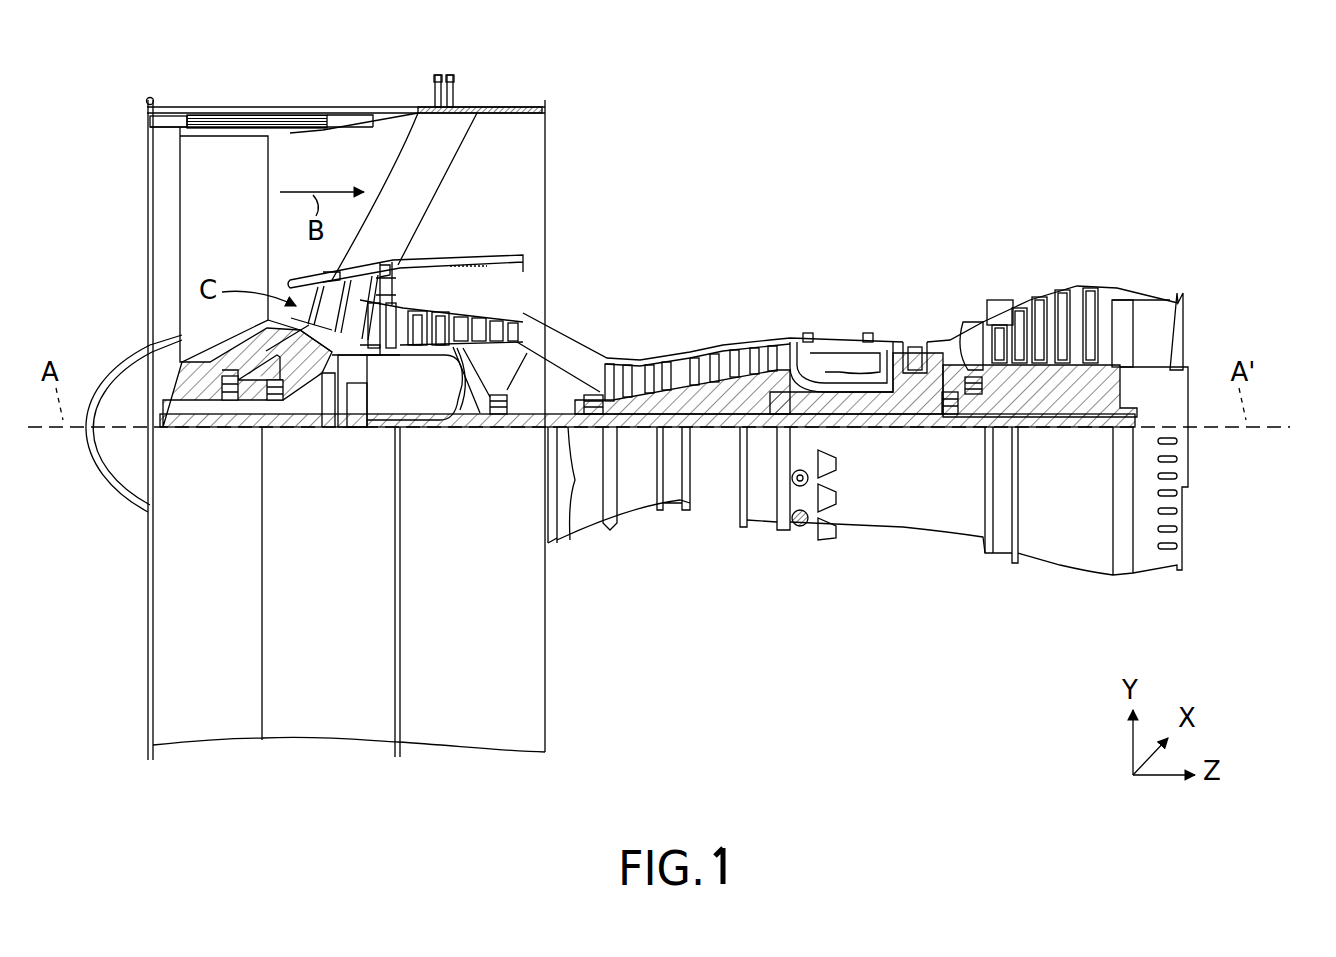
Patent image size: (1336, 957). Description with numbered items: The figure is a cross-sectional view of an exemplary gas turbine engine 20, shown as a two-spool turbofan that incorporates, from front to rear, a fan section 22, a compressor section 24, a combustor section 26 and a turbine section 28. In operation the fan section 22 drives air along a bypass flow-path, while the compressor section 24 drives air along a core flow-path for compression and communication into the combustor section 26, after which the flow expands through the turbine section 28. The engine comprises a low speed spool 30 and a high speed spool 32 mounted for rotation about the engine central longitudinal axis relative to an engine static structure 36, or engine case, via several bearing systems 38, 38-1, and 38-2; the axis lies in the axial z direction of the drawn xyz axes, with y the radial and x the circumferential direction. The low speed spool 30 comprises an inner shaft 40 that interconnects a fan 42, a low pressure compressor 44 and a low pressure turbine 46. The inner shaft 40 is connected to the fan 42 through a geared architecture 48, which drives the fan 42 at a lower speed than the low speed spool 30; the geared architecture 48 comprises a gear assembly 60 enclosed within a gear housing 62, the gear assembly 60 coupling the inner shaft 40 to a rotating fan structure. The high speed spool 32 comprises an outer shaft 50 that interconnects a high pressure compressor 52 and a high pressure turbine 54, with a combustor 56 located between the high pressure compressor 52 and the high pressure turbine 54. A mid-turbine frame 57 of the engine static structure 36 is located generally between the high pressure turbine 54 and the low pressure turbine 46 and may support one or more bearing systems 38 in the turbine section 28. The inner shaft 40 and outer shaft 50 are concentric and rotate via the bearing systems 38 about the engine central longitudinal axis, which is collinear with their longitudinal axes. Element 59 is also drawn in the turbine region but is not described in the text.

The gas turbine engine 20 is at (897, 136).
The fan section 22 is at (390, 84).
The compressor section 24 is at (400, 221).
The combustor section 26 is at (785, 221).
The turbine section 28 is at (1125, 221).
The low speed spool 30 is at (718, 448).
The high speed spool 32 is at (760, 392).
The engine static structure 36 is at (323, 723).
The bearing system 38 is at (955, 418).
The bearing system 38-1 is at (238, 405).
The bearing system 38-2 is at (493, 417).
The inner shaft 40 is at (565, 460).
The fan 42 is at (208, 237).
The low pressure compressor 44 is at (478, 318).
The low pressure turbine 46 is at (1047, 307).
The geared architecture 48 is at (352, 442).
The outer shaft 50 is at (840, 412).
The high pressure compressor 52 is at (688, 392).
The high pressure turbine 54 is at (917, 345).
The combustor 56 is at (838, 362).
The mid-turbine frame 57 is at (958, 345).
The airfoils / vanes 59 is at (977, 357).
The gear assembly 60 is at (370, 410).
The gear housing 62 is at (370, 380).